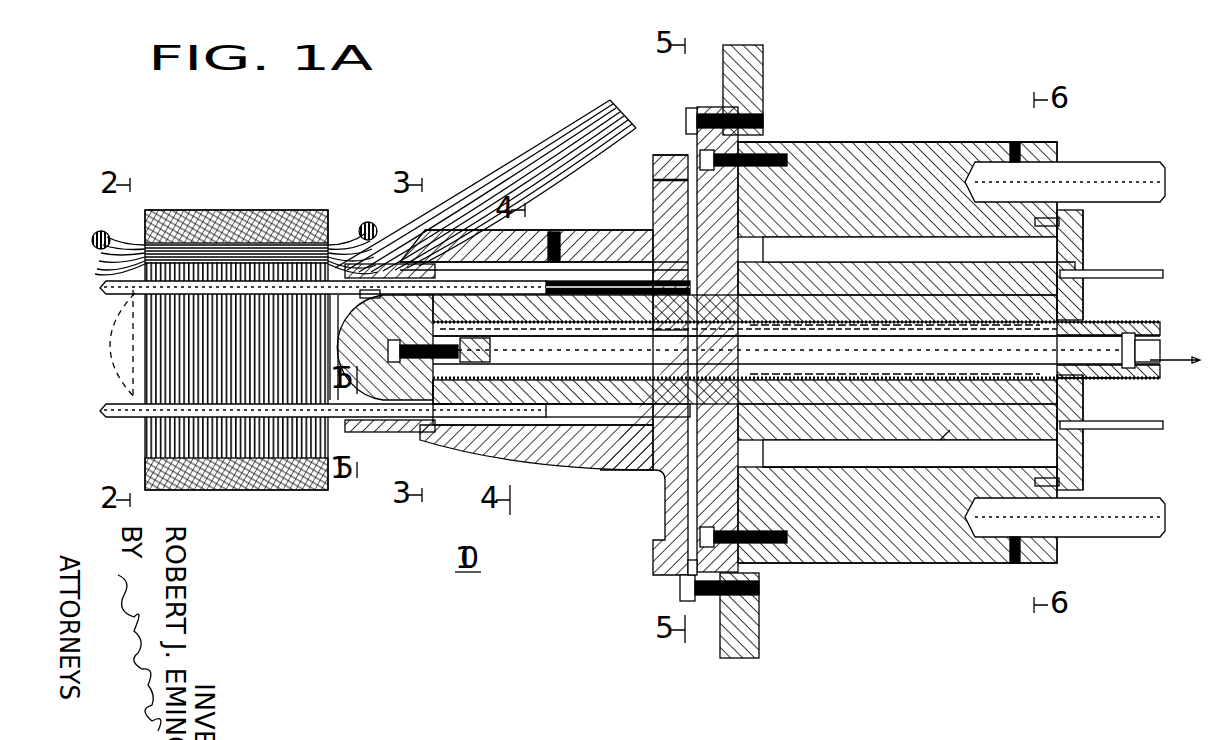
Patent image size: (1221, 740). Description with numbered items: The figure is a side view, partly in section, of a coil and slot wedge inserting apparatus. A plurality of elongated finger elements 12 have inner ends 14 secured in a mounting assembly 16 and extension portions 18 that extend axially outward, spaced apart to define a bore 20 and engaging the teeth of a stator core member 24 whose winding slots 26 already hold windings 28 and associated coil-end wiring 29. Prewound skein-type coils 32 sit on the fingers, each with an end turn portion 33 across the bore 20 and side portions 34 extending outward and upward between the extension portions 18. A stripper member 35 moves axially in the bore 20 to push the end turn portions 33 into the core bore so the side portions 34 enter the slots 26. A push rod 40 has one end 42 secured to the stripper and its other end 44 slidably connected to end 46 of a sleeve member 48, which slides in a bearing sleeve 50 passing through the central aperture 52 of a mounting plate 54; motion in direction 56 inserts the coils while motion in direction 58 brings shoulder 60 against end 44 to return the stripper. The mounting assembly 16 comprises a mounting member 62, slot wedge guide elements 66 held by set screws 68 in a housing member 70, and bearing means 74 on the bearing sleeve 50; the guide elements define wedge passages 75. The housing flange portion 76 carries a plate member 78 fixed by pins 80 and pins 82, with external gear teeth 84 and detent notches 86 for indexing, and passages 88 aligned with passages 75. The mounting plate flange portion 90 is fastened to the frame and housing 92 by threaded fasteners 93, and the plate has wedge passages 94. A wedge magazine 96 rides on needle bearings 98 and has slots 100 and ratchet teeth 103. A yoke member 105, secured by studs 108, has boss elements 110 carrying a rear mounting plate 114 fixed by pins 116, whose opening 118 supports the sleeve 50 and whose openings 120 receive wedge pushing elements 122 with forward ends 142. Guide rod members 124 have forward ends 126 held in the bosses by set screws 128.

The finger elements 12 is at (342, 297).
The inner ends 14 is at (560, 270).
The mounting assembly 16 is at (561, 236).
The extension portions 18 is at (126, 282).
The bore 20 is at (364, 361).
The stator core member 24 is at (200, 216).
The winding slots 26 is at (150, 446).
The windings 28 is at (280, 227).
The stator windings 29 is at (371, 226).
The prewound coils 32 is at (599, 116).
The end turn portion 33 is at (388, 292).
The side portions 34 is at (542, 150).
The stripper member 35 is at (106, 346).
The push rod 40 is at (886, 362).
The end of push rod 42 is at (444, 416).
The other end of push rod 44 is at (1100, 334).
The end of sleeve member 46 is at (906, 406).
The sleeve member 48 is at (1132, 368).
The bearing sleeve 50 is at (586, 360).
The central aperture 52 is at (708, 321).
The mounting plate 54 is at (758, 582).
The arrow 56 is at (1150, 342).
The arrow 58 is at (1177, 376).
The shoulder 60 is at (1118, 372).
The mounting member 62 is at (482, 420).
The slot wedge guide elements 66 is at (374, 262).
The set screws 68 is at (552, 232).
The housing member 70 is at (652, 248).
The bearing means 74 is at (572, 444).
The wedge passages 75 is at (620, 446).
The flange portion 76 is at (654, 159).
The plate member 78 is at (688, 569).
The pins 80 is at (653, 181).
The pins 82 is at (668, 318).
The external gear teeth 84 is at (654, 155).
The detent notches 86 is at (686, 114).
The passages 88 is at (654, 496).
The flange portion 90 is at (720, 107).
The frame and housing 92 is at (762, 52).
The threaded fasteners 93 is at (680, 587).
The wedge passages 94 is at (750, 325).
The wedge magazine 96 is at (986, 444).
The needle bearings 98 is at (844, 328).
The slots 100 is at (929, 266).
The ratchet teeth 103 is at (764, 450).
The yoke member 105 is at (838, 140).
The studs 108 is at (762, 154).
The boss elements 110 is at (883, 142).
The rear mounting plate 114 is at (1082, 232).
The pins 116 is at (1060, 220).
The opening 118 is at (1082, 290).
The openings 120 is at (1058, 268).
The slot wedge pushing elements 122 is at (1120, 274).
The guide rod members 124 is at (1124, 164).
The forward ends 126 is at (980, 162).
The set screws 128 is at (1014, 564).
The forward ends 142 is at (1090, 426).